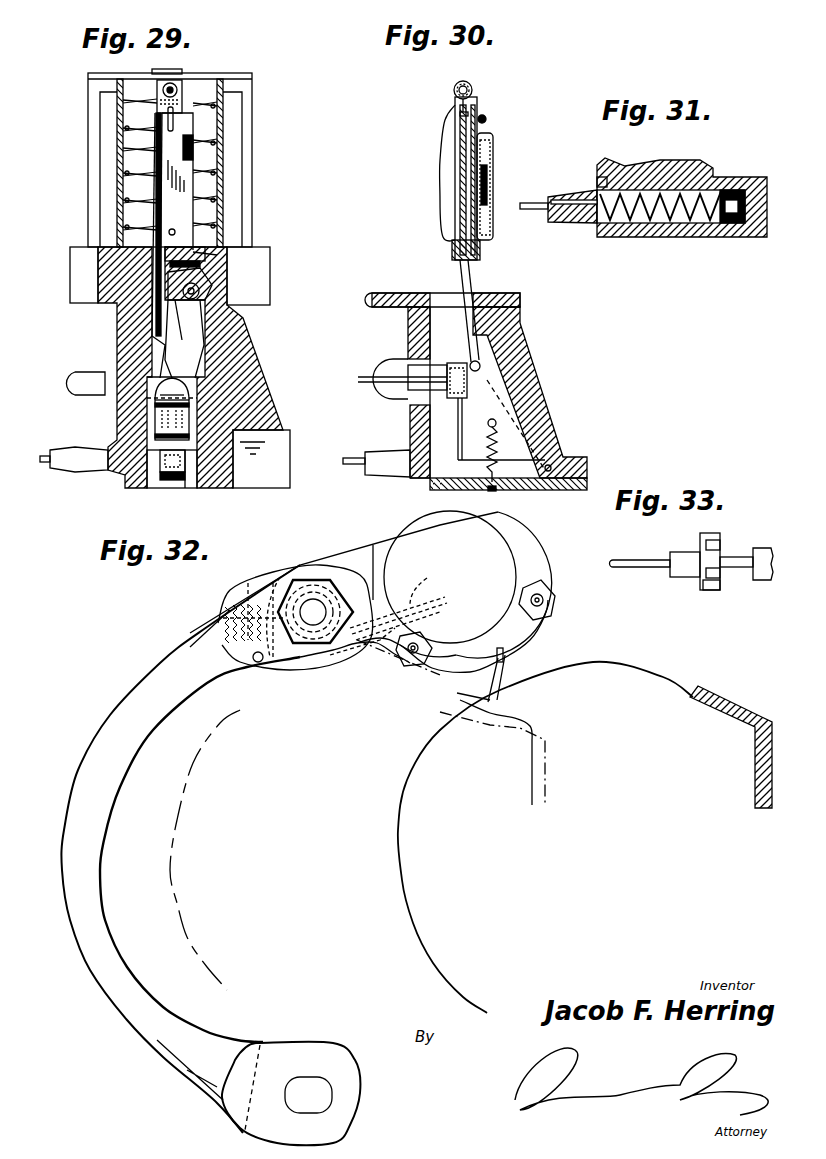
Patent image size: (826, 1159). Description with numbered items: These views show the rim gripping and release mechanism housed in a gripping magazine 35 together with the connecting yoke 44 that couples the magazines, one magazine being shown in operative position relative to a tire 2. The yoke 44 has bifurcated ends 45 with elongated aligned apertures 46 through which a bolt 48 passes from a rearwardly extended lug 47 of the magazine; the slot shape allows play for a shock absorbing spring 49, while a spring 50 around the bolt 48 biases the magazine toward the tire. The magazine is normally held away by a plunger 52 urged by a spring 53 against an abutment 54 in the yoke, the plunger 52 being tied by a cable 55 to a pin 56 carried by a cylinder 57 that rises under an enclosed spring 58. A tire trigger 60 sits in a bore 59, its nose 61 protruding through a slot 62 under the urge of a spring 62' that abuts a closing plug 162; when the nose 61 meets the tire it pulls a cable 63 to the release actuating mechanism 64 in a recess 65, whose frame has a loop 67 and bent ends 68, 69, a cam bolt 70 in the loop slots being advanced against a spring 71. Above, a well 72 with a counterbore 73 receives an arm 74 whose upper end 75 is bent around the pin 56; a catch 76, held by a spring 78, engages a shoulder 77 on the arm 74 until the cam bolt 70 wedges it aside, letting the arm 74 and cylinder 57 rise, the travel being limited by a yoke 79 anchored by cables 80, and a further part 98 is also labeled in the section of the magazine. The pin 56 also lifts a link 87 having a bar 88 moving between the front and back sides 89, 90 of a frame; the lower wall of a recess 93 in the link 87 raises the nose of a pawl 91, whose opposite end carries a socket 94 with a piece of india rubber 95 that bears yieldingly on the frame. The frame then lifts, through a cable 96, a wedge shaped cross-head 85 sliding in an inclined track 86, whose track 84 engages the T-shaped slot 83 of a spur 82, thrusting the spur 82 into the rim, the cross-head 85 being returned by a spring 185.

In FIG. 32, the vehicle body / frame rail 2 is at (187, 775).
In FIG. 29, the gripping magazine 35 is at (276, 266).
In FIG. 30, the gripping magazine 35 is at (368, 298).
In FIG. 31, the gripping magazine 35 is at (594, 168).
In FIG. 32, the gripping magazine 35 is at (550, 567).
In FIG. 32, the yoke 44 is at (60, 802).
In FIG. 32, the bifurcated ends 45 is at (278, 1048).
In FIG. 32, the elongated aligned apertures 46 is at (315, 1080).
In FIG. 32, the rearwardly extended lug 47 is at (307, 563).
In FIG. 32, the bolt 48 is at (315, 645).
In FIG. 32, the shock absorbing spring 49 is at (230, 600).
In FIG. 32, the spring 50 is at (303, 650).
In FIG. 32, the plunger 52 is at (265, 695).
In FIG. 32, the spring 53 is at (355, 650).
In FIG. 32, the abutment 54 is at (250, 668).
In FIG. 32, the cable 55 is at (451, 591).
In FIG. 29, the pin 56 is at (178, 90).
In FIG. 30, the pin 56 is at (470, 88).
In FIG. 29, the cylinder 57 is at (117, 197).
In FIG. 29, the spring 58 is at (220, 185).
In FIG. 31, the bore 59 is at (715, 183).
In FIG. 31, the tire trigger 60 is at (568, 230).
In FIG. 29, the nose 61 is at (48, 456).
In FIG. 30, the nose 61 is at (356, 450).
In FIG. 31, the nose 61 is at (534, 204).
In FIG. 32, the nose 61 is at (457, 693).
In FIG. 31, the slot 62 is at (562, 222).
In FIG. 31, the spring 62' is at (665, 231).
In FIG. 29, the cable 63 is at (117, 476).
In FIG. 31, the cable 63 is at (655, 170).
In FIG. 29, the release actuating mechanism 64 is at (155, 425).
In FIG. 29, the recess 65 is at (185, 386).
In FIG. 29, the intermediate loop 67 is at (190, 485).
In FIG. 29, the angularly bent end 68 is at (152, 486).
In FIG. 29, the angularly bent end 69 is at (147, 400).
In FIG. 29, the cam bolt 70 is at (180, 396).
In FIG. 29, the spring 71 is at (172, 486).
In FIG. 29, the well or depression 72 is at (70, 279).
In FIG. 29, the counterbore 73 is at (215, 335).
In FIG. 29, the arm 74 is at (152, 320).
In FIG. 30, the upper end 75 is at (454, 92).
In FIG. 29, the catch 76 is at (200, 360).
In FIG. 29, the shoulder 77 is at (158, 366).
In FIG. 29, the spring 78 is at (262, 318).
In FIG. 29, the yoke 79 is at (154, 70).
In FIG. 29, the cables 80 is at (196, 122).
In FIG. 29, the spur 82 is at (70, 384).
In FIG. 30, the spur 82 is at (360, 375).
In FIG. 33, the spur 82 is at (640, 567).
In FIG. 32, the spur 82 is at (500, 670).
In FIG. 33, the T-shaped slot 83 is at (722, 546).
In FIG. 30, the track 84 is at (462, 420).
In FIG. 33, the track 84 is at (712, 590).
In FIG. 30, the cross-head 85 is at (500, 393).
In FIG. 30, the track 86 is at (551, 466).
In FIG. 29, the link 87 is at (180, 128).
In FIG. 30, the link 87 is at (478, 102).
In FIG. 29, the bar 88 is at (176, 232).
In FIG. 30, the bar 88 is at (452, 246).
In FIG. 30, the front side 89 is at (486, 118).
In FIG. 30, the back side 90 is at (453, 116).
In FIG. 29, the pawl 91 is at (195, 150).
In FIG. 30, the pawl 91 is at (495, 145).
In FIG. 29, the recess 93 is at (123, 148).
In FIG. 30, the socket 94 is at (466, 188).
In FIG. 30, the piece of india rubber 95 is at (488, 215).
In FIG. 30, the cable 96 is at (472, 280).
In FIG. 29, the plate 98 is at (220, 263).
In FIG. 31, the closing plug 162 is at (730, 224).
In FIG. 30, the spring 185 is at (505, 432).